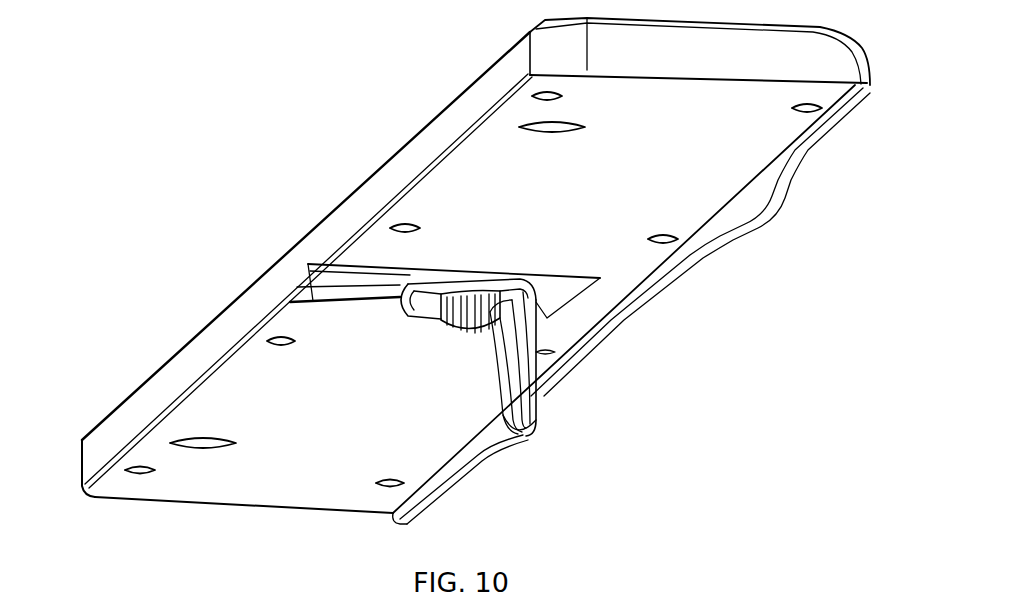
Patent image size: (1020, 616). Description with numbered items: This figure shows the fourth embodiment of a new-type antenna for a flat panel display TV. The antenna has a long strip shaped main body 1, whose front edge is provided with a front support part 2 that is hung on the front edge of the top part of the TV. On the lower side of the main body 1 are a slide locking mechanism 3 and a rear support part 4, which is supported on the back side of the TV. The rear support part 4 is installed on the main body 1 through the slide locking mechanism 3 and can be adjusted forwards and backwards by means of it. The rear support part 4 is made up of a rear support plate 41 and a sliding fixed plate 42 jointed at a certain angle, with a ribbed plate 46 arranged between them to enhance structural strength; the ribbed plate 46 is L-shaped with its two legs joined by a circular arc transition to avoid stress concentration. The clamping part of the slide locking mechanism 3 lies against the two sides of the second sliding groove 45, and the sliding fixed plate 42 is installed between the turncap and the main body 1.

The main body 1 is at (223, 416).
The front support part 2 is at (742, 210).
The slide locking mechanism 3 is at (457, 296).
The rear support part 4 is at (540, 303).
The rear support plate 41 is at (523, 427).
The sliding fixed plate 42 is at (423, 282).
The second sliding groove 45 is at (319, 278).
The ribbed plate 46 is at (530, 290).